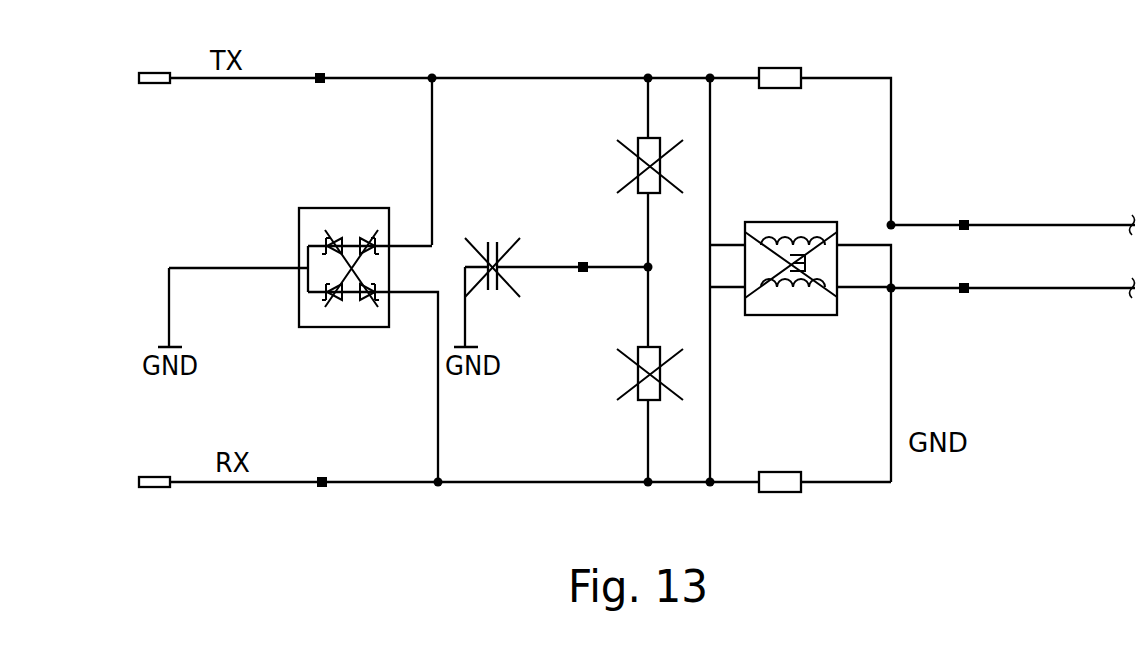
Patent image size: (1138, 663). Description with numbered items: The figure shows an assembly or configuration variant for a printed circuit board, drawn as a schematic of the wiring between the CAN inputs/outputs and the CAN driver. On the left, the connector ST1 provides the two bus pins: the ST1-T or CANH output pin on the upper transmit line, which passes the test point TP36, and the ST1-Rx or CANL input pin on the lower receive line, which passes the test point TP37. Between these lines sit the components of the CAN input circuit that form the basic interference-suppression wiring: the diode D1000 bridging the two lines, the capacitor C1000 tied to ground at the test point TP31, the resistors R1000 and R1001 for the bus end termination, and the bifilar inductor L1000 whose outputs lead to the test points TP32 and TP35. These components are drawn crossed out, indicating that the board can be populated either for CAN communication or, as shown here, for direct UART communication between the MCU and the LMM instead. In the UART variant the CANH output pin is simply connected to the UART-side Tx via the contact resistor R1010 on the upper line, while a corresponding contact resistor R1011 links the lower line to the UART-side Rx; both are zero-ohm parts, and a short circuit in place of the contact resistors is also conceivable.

The CAN connector ST1 is at (161, 279).
The test point TP36 is at (320, 64).
The test point TP37 is at (320, 467).
The test point TP31 is at (584, 254).
The test point TP32 is at (972, 212).
The test point TP35 is at (970, 275).
The contact resistor R1010 is at (788, 71).
The resistor R1011 (0R) R1011 is at (785, 481).
The resistor for bus end termination R1000 is at (653, 166).
The resistor for bus end termination R1001 is at (653, 376).
The component for CAN input circuit D1000 is at (328, 272).
The component for CAN input circuit C1000 is at (497, 271).
The bifilar inductor L1000 is at (794, 277).